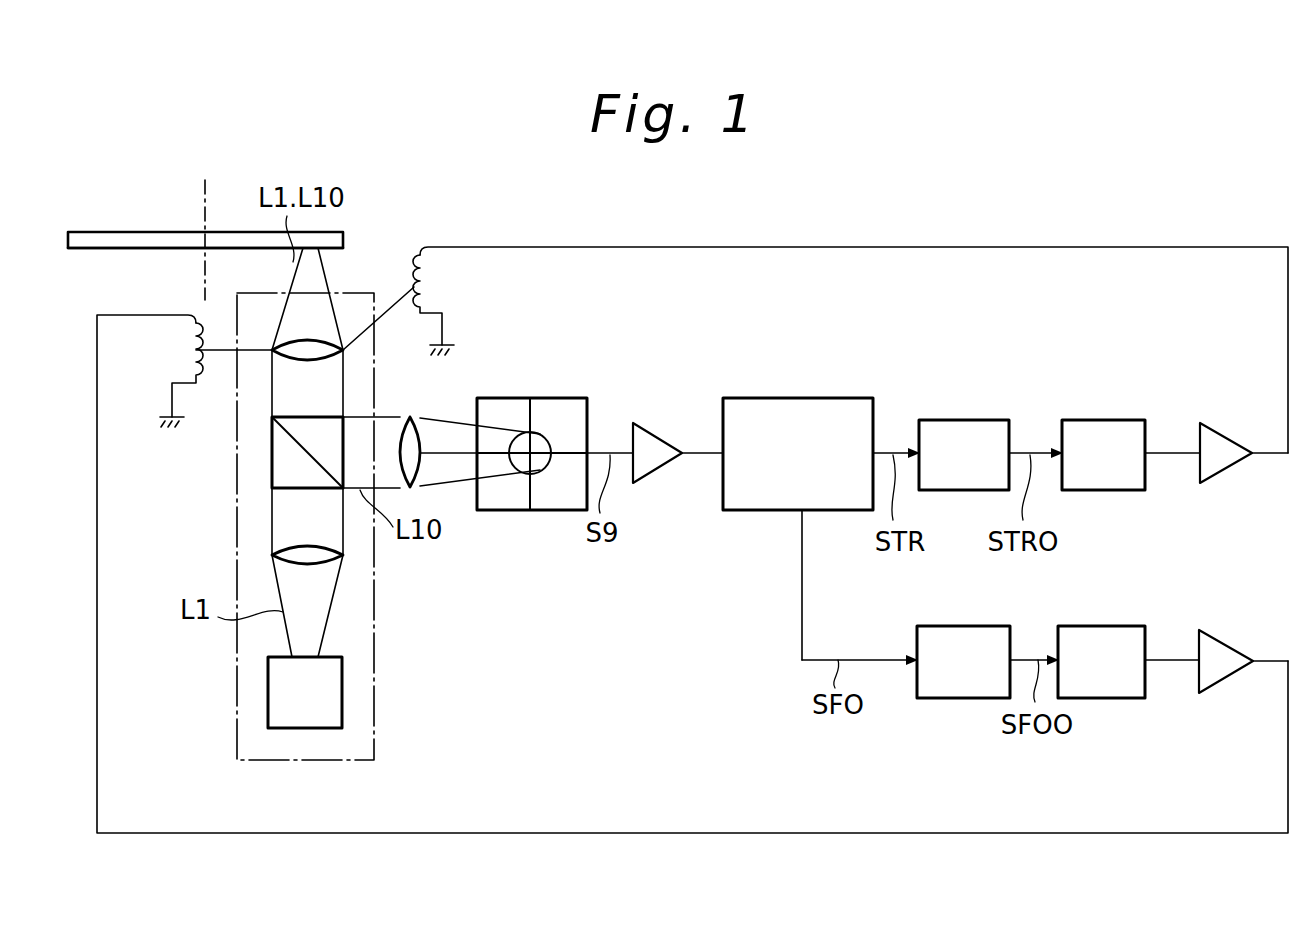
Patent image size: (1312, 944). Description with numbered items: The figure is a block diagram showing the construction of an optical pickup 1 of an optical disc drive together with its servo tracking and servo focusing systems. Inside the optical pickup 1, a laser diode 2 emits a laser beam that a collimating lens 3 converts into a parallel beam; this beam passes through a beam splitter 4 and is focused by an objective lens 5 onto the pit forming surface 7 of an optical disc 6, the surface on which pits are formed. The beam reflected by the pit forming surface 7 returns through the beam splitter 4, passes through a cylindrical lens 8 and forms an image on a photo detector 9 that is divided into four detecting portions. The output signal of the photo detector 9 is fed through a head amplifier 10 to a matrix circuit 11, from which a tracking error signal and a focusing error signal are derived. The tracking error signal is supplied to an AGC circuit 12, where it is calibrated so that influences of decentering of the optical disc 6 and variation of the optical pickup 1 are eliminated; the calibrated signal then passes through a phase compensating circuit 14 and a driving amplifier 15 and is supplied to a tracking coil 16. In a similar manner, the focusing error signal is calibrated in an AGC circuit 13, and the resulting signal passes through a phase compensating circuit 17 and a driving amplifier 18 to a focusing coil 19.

The optical pickup 1 is at (380, 650).
The laser diode 2 is at (317, 728).
The collimating lens 3 is at (300, 548).
The beam splitter 4 is at (283, 465).
The objective lens 5 is at (345, 357).
The optical disc 6 is at (108, 232).
The pit forming surface 7 is at (100, 249).
The cylindrical lens 8 is at (420, 440).
The photo detector 9 is at (570, 398).
The head amplifier 10 is at (660, 435).
The matrix circuit 11 is at (800, 398).
The AGC circuit 12 is at (968, 420).
The AGC circuit 13 is at (957, 698).
The phase compensating circuit 14 is at (1103, 420).
The driving amplifier 15 is at (1215, 430).
The tracking coil 16 is at (420, 248).
The phase compensating circuit 17 is at (1133, 698).
The driving amplifier 18 is at (1228, 683).
The focusing coil 19 is at (185, 345).